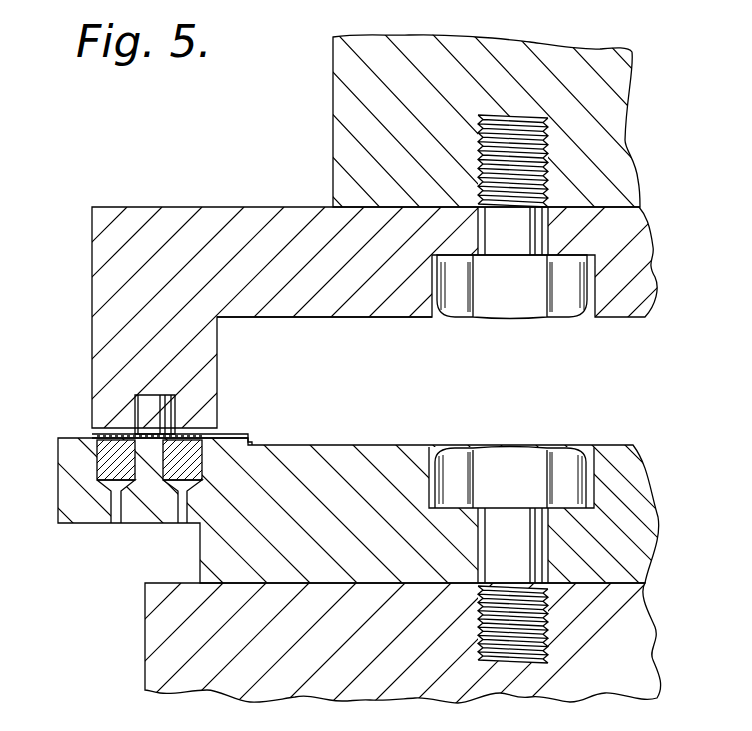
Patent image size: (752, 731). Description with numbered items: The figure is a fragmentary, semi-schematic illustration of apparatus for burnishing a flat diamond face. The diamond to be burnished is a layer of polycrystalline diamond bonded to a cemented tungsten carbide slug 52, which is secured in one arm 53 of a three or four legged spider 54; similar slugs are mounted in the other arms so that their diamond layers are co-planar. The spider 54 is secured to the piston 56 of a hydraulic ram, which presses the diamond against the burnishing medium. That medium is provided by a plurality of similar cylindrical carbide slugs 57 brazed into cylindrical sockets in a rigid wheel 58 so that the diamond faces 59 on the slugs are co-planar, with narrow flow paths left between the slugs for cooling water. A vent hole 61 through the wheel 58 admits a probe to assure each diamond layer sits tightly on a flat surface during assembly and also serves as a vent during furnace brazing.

The cemented tungsten carbide slug 52 is at (135, 402).
The arm 53 is at (92, 309).
The spider 54 is at (311, 318).
The piston 56 is at (333, 63).
The cylindrical carbide slugs 57 is at (133, 434).
The rigid wheel 58 is at (200, 552).
The diamond faces 59 is at (232, 436).
The vent hole 61 is at (176, 522).